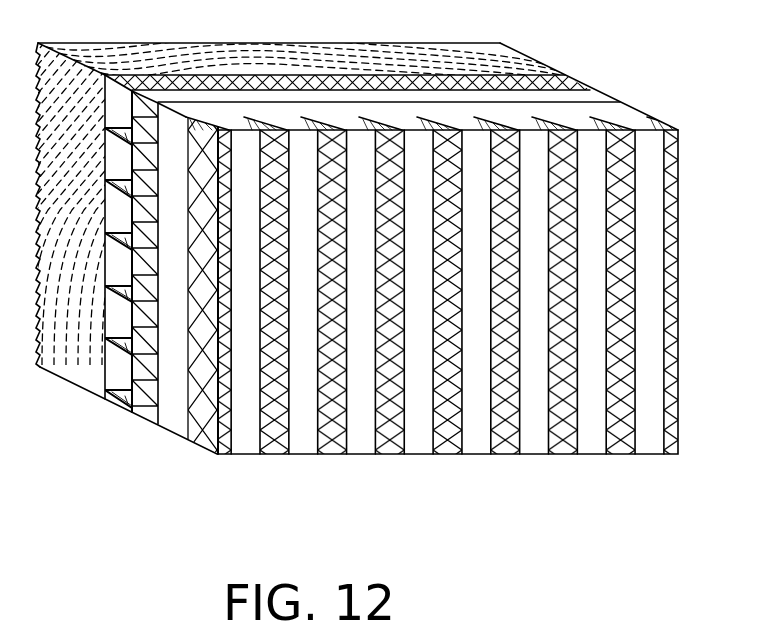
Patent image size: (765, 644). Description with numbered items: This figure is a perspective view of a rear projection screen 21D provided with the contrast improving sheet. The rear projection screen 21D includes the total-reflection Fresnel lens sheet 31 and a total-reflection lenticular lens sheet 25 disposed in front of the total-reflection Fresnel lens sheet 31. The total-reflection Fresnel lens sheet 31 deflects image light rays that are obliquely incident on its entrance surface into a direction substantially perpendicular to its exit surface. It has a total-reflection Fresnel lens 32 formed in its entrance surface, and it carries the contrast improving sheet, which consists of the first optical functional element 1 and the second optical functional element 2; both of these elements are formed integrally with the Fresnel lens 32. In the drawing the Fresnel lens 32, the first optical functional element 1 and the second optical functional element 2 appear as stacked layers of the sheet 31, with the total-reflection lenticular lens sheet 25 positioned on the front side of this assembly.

The rear projection screen 21D is at (702, 56).
The total-reflection Fresnel lens sheet 31 is at (21, 430).
The total-reflection Fresnel lens 32 is at (37, 338).
The first optical functional element 1 is at (118, 414).
The second optical functional element 2 is at (152, 423).
The total-reflection lenticular lens sheet 25 is at (202, 453).